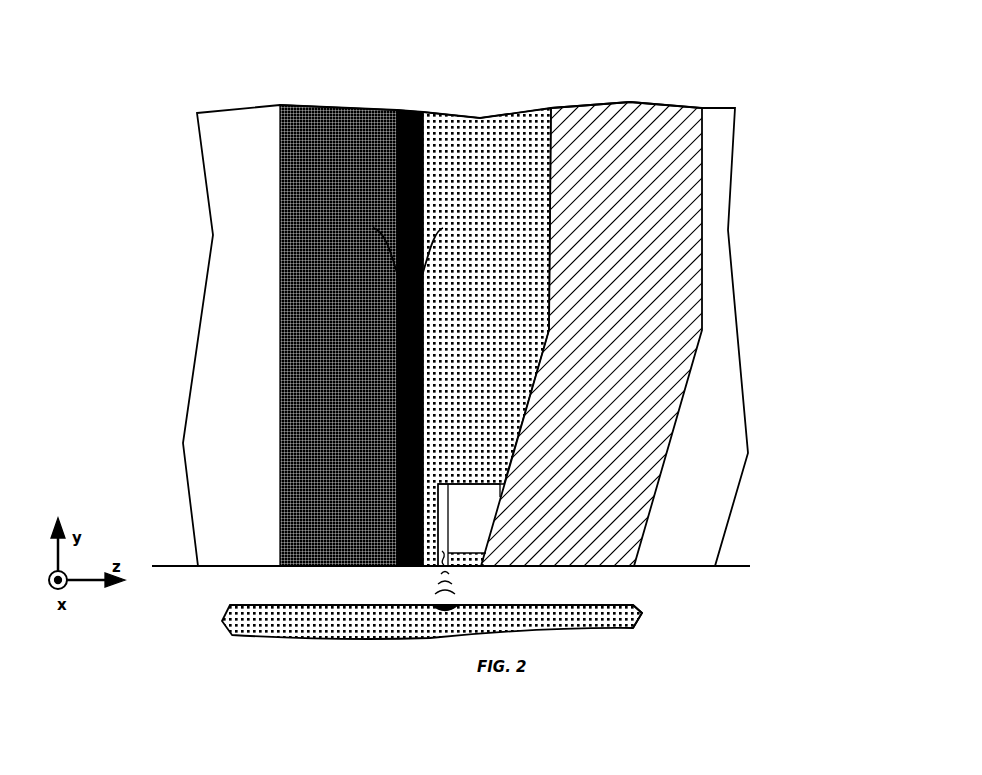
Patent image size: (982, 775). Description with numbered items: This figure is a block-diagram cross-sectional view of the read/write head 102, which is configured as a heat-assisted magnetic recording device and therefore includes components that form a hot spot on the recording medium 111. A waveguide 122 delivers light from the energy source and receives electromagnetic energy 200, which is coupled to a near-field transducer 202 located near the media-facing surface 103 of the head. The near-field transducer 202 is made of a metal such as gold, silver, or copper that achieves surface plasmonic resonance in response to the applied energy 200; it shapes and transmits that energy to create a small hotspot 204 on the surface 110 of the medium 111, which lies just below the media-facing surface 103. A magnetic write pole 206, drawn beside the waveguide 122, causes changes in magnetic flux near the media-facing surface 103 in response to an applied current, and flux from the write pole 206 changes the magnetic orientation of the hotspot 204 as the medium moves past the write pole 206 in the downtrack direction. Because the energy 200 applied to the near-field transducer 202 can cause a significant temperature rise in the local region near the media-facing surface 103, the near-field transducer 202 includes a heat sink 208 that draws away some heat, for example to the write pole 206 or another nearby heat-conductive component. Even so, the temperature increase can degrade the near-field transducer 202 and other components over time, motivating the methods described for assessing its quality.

The read/write head 102 is at (182, 78).
The waveguide 122 is at (543, 82).
The magnetic write pole 206 is at (637, 102).
The electromagnetic energy 200 is at (392, 254).
The near-field transducer 202 is at (437, 577).
The heat sink 208 is at (463, 548).
The hotspot 204 is at (443, 612).
The surface 110 is at (593, 618).
The recording medium 111 is at (618, 612).
The media-facing surface 103 is at (738, 567).